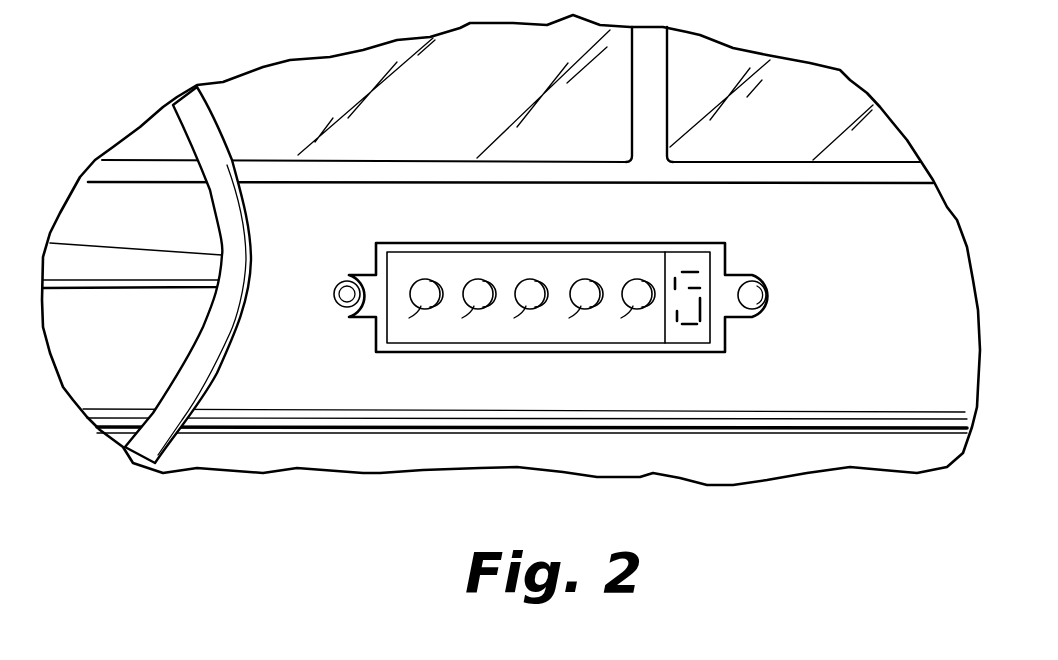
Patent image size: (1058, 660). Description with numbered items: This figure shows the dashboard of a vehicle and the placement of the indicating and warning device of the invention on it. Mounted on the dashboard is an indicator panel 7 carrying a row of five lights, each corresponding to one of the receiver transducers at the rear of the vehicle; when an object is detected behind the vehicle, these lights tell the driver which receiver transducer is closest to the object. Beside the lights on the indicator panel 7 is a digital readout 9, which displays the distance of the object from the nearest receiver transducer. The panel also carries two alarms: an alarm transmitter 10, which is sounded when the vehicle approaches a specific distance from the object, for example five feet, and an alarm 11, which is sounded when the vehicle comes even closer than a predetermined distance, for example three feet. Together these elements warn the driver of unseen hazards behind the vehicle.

The dashboard indicator panel 7 is at (720, 352).
The digital readout 9 is at (693, 268).
The alarm transmitter 10 is at (755, 278).
The alarm 11 is at (334, 274).